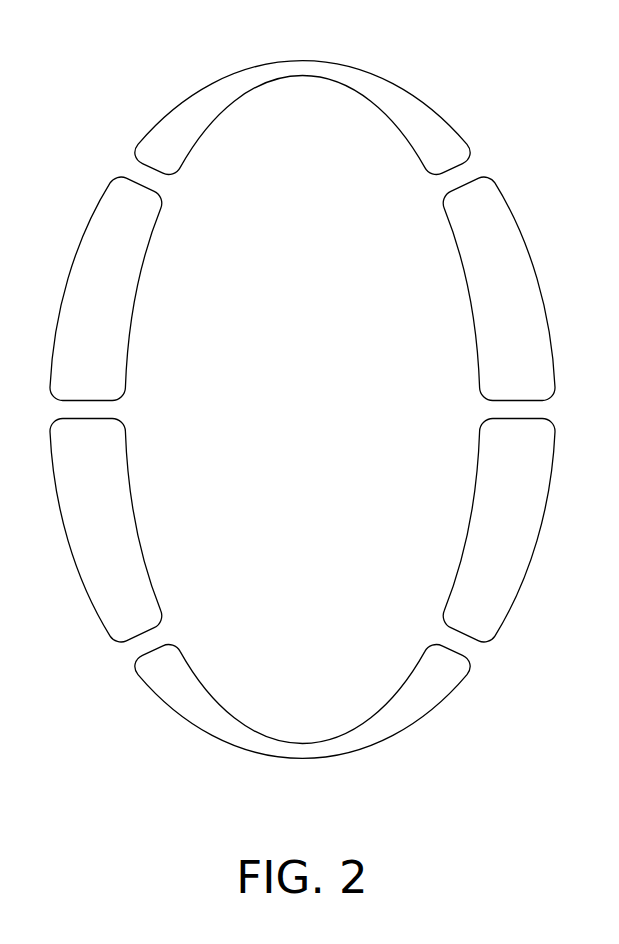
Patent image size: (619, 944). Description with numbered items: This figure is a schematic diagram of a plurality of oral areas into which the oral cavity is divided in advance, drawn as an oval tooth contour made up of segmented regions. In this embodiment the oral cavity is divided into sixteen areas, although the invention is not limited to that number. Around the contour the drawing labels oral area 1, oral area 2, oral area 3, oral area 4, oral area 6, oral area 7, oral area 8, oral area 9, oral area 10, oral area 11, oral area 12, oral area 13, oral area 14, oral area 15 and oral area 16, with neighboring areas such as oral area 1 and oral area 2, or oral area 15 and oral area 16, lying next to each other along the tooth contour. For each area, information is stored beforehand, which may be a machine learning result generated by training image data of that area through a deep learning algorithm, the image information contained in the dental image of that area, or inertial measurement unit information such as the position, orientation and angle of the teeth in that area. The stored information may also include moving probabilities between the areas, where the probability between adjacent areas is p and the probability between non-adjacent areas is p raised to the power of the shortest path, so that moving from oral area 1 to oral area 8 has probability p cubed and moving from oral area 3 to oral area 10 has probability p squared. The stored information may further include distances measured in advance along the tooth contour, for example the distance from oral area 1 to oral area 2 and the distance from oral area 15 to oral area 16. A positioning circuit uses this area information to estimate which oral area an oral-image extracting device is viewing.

The oral area 1 is at (99, 288).
The oral area 2 is at (302, 99).
The oral area 3 is at (503, 288).
The oral area 4 is at (300, 288).
The oral area 6 is at (106, 288).
The oral area 7 is at (302, 118).
The oral area 8 is at (499, 288).
The oral area 9 is at (100, 530).
The oral area 10 is at (302, 722).
The oral area 11 is at (506, 530).
The oral area 12 is at (493, 530).
The oral area 13 is at (110, 530).
The oral area 14 is at (110, 530).
The oral area 15 is at (302, 702).
The oral area 16 is at (493, 530).